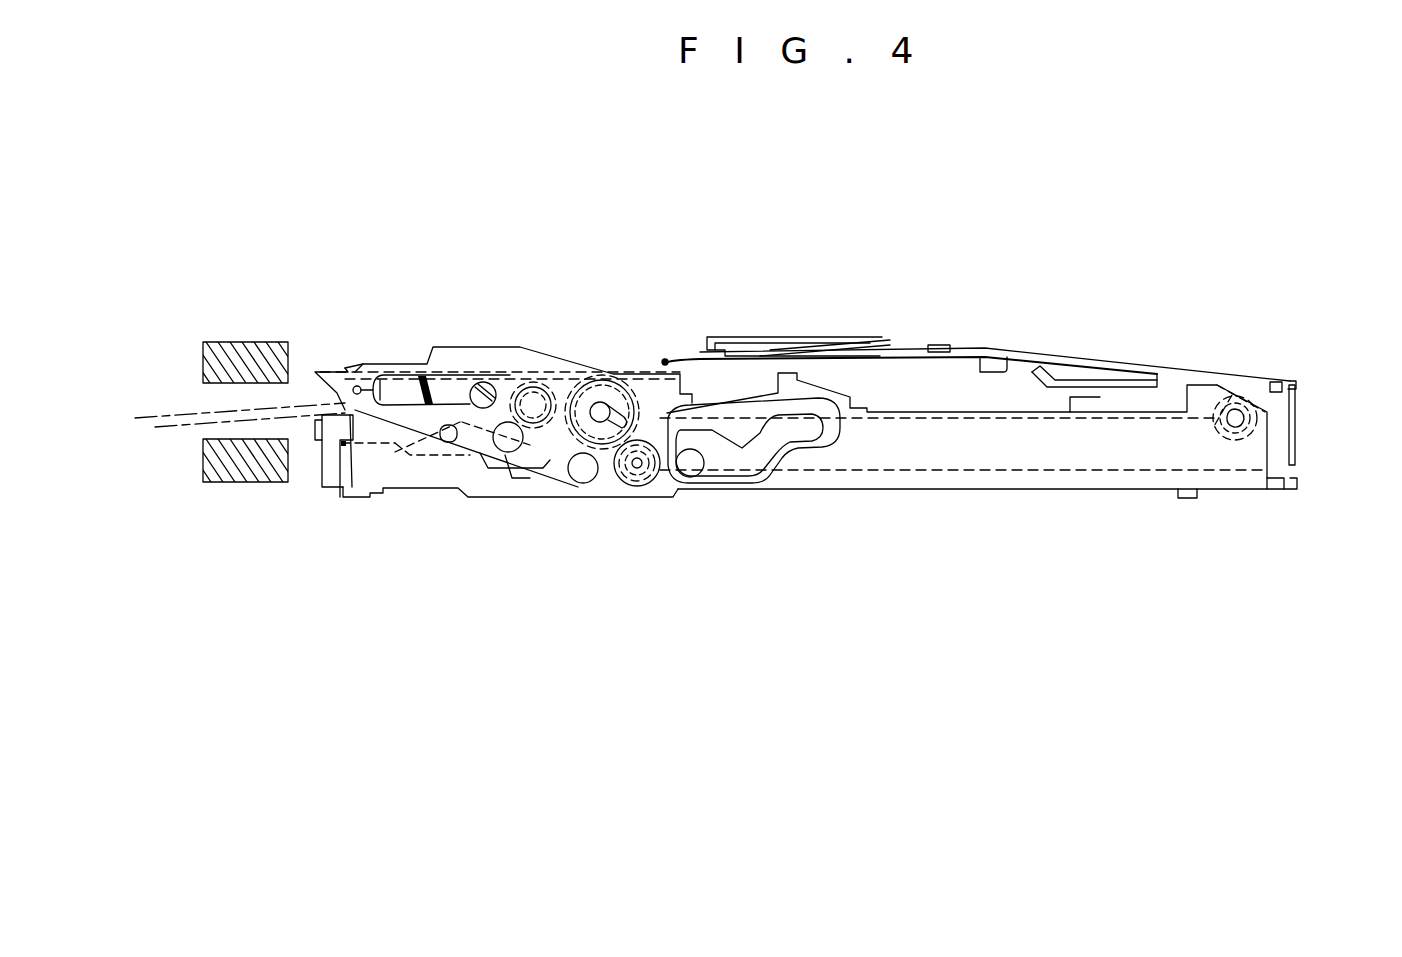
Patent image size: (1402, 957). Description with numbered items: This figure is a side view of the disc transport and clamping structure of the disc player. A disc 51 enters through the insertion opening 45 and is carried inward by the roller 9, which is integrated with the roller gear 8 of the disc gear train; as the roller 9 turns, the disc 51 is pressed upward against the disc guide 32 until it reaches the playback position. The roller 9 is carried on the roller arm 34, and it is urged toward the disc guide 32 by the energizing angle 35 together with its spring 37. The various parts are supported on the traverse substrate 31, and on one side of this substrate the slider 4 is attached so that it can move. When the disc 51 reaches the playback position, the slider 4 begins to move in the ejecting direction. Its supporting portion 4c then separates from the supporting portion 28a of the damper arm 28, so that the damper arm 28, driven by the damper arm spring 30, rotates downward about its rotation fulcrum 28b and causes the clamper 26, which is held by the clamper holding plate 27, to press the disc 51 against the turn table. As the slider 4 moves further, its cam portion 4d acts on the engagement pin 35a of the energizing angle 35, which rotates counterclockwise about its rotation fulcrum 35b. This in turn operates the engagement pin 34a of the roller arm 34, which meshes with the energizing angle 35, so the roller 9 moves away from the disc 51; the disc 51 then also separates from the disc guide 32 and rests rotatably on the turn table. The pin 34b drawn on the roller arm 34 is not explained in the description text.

The slider 4 is at (1222, 492).
The supporting portion 4c is at (1080, 400).
The cam portion 4d is at (767, 450).
The roller gear 8 is at (546, 381).
The roller 9 is at (518, 395).
The clamper 26 is at (703, 362).
The clamper holding plate 27 is at (837, 340).
The damper arm 28 is at (1021, 350).
The supporting portion 28a is at (1103, 360).
The rotation fulcrum 28b is at (1245, 427).
The damper arm spring 30 is at (1257, 377).
The traverse substrate 31 is at (494, 497).
The disc guide 32 is at (613, 374).
The roller arm 34 is at (395, 462).
The engagement pin 34a is at (512, 478).
The lever pin 34b is at (442, 447).
The energizing angle 35 is at (610, 492).
The engagement pin 35a is at (693, 464).
The rotation fulcrum 35b is at (578, 483).
The spring 37 is at (400, 390).
The insertion opening 45 is at (242, 338).
The disc 51 is at (147, 413).